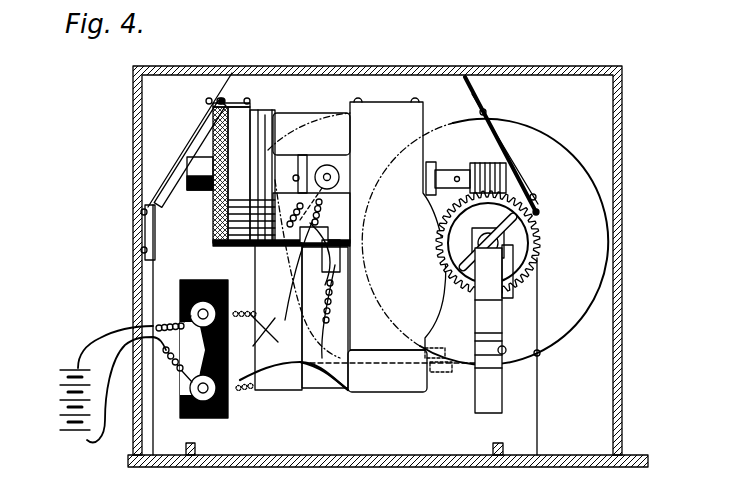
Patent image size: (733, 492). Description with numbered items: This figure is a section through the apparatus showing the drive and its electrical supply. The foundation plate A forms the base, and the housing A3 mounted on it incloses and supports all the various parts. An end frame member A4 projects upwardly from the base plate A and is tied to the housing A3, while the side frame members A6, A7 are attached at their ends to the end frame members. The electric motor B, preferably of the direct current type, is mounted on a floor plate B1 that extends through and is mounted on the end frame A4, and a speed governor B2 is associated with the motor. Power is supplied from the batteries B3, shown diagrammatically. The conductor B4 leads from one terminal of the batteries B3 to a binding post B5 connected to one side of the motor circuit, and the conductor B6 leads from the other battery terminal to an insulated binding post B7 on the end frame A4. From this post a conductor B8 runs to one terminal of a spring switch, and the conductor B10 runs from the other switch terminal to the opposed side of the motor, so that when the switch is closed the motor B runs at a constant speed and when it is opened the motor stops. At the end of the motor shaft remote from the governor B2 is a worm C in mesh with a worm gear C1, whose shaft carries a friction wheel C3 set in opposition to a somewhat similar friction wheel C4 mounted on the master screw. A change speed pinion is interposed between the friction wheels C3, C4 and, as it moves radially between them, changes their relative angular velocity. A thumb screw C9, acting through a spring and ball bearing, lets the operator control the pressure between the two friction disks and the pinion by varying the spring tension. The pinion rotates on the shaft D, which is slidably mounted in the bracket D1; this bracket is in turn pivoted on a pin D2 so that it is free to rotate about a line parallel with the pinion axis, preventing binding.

The foundation plate A is at (603, 467).
The housing A3 is at (616, 186).
The end frame member A4 is at (522, 410).
The side frame member A6 is at (440, 163).
The side frame member A7 is at (204, 124).
The electric motor B is at (392, 110).
The floor plate B1 is at (410, 380).
The speed governor B2 is at (240, 118).
The batteries B3 is at (62, 402).
The conductor B4 is at (97, 342).
The binding post B5 is at (182, 310).
The conductor B6 is at (93, 440).
The insulated binding post B7 is at (192, 388).
The conductor B8 is at (273, 373).
The conductor B10 is at (340, 385).
The worm C is at (506, 178).
The worm gear C1 is at (448, 262).
The friction wheel C3 is at (592, 237).
The friction wheel C4 is at (264, 372).
The thumb screw C9 is at (497, 247).
The shaft D is at (301, 285).
The bracket D1 is at (307, 302).
The pin D2 is at (252, 350).